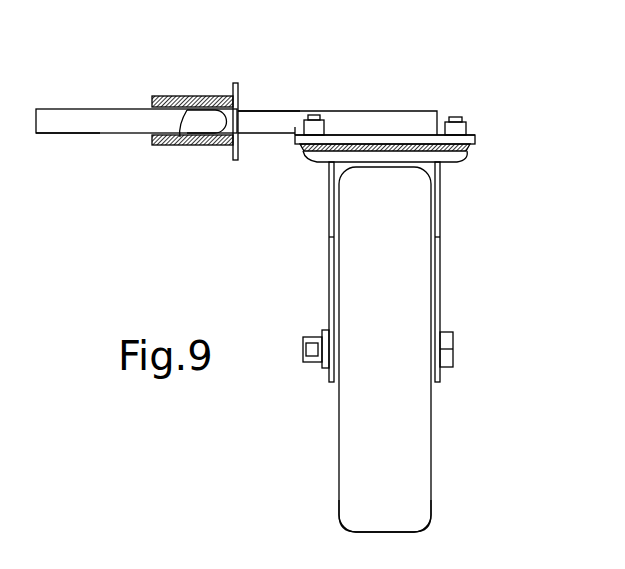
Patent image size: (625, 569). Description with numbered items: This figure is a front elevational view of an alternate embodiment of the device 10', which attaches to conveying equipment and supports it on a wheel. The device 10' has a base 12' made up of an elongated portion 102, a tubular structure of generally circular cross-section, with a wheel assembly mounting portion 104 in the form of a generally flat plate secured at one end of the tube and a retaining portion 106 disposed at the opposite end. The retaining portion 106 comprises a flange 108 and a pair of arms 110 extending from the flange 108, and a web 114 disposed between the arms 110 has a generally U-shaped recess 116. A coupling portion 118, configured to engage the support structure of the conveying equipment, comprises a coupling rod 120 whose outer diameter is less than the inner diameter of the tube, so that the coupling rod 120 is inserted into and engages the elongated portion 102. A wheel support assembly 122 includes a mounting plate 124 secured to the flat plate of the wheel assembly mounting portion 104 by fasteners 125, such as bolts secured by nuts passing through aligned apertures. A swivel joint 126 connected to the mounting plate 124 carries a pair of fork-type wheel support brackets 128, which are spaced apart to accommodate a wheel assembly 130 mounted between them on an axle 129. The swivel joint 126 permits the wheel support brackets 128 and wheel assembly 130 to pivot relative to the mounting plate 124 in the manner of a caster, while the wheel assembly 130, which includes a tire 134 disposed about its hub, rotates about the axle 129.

The device 10' is at (562, 62).
The base 12' is at (280, 65).
The elongated portion 102 is at (298, 110).
The wheel assembly mounting portion 104 is at (397, 129).
The retaining portion 106 is at (267, 165).
The flange 108 is at (236, 84).
The arms 110 is at (163, 93).
The web 114 is at (181, 140).
The U-shaped recess 116 is at (212, 122).
The coupling portion 118 is at (101, 137).
The coupling rod 120 is at (77, 115).
The wheel support assembly 122 is at (452, 165).
The mounting plate 124 is at (478, 143).
The fasteners 125 is at (463, 118).
The swivel joint 126 is at (318, 158).
The wheel support brackets 128 is at (328, 302).
The axle 129 is at (455, 335).
The wheel assembly 130 is at (433, 445).
The tire 134 is at (424, 504).